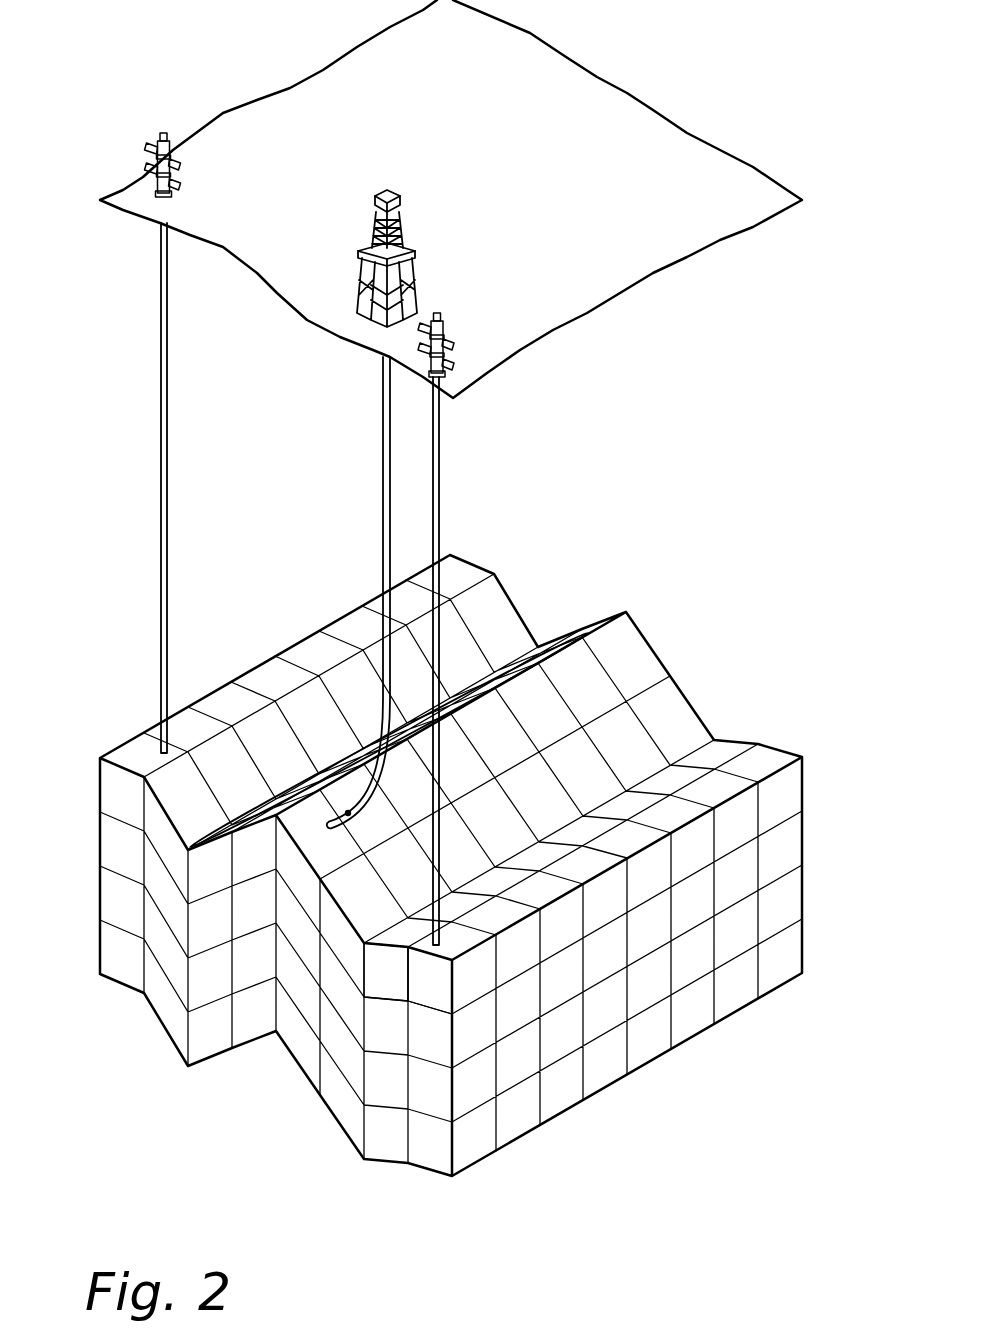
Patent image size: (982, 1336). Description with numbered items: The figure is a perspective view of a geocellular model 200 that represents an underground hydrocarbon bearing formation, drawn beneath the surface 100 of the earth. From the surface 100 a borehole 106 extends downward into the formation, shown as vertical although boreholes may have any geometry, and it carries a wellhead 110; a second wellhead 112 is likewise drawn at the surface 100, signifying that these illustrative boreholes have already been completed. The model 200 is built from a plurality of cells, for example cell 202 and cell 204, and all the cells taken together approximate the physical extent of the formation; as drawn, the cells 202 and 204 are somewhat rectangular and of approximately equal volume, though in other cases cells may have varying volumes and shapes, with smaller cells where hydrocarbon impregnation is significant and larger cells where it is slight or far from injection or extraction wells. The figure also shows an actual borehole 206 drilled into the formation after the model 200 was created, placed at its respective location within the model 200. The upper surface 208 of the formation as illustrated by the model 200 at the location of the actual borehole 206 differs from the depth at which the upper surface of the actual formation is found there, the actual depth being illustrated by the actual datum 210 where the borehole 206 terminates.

The surface 100 is at (545, 70).
The borehole 106 is at (168, 388).
The wellhead 110 is at (162, 132).
The wellhead 112 is at (437, 313).
The geocellular model 200 is at (677, 585).
The cell 202 is at (428, 988).
The cell 204 is at (390, 983).
The actual borehole 206 is at (383, 498).
The upper surface 208 is at (675, 720).
The actual datum 210 is at (348, 813).